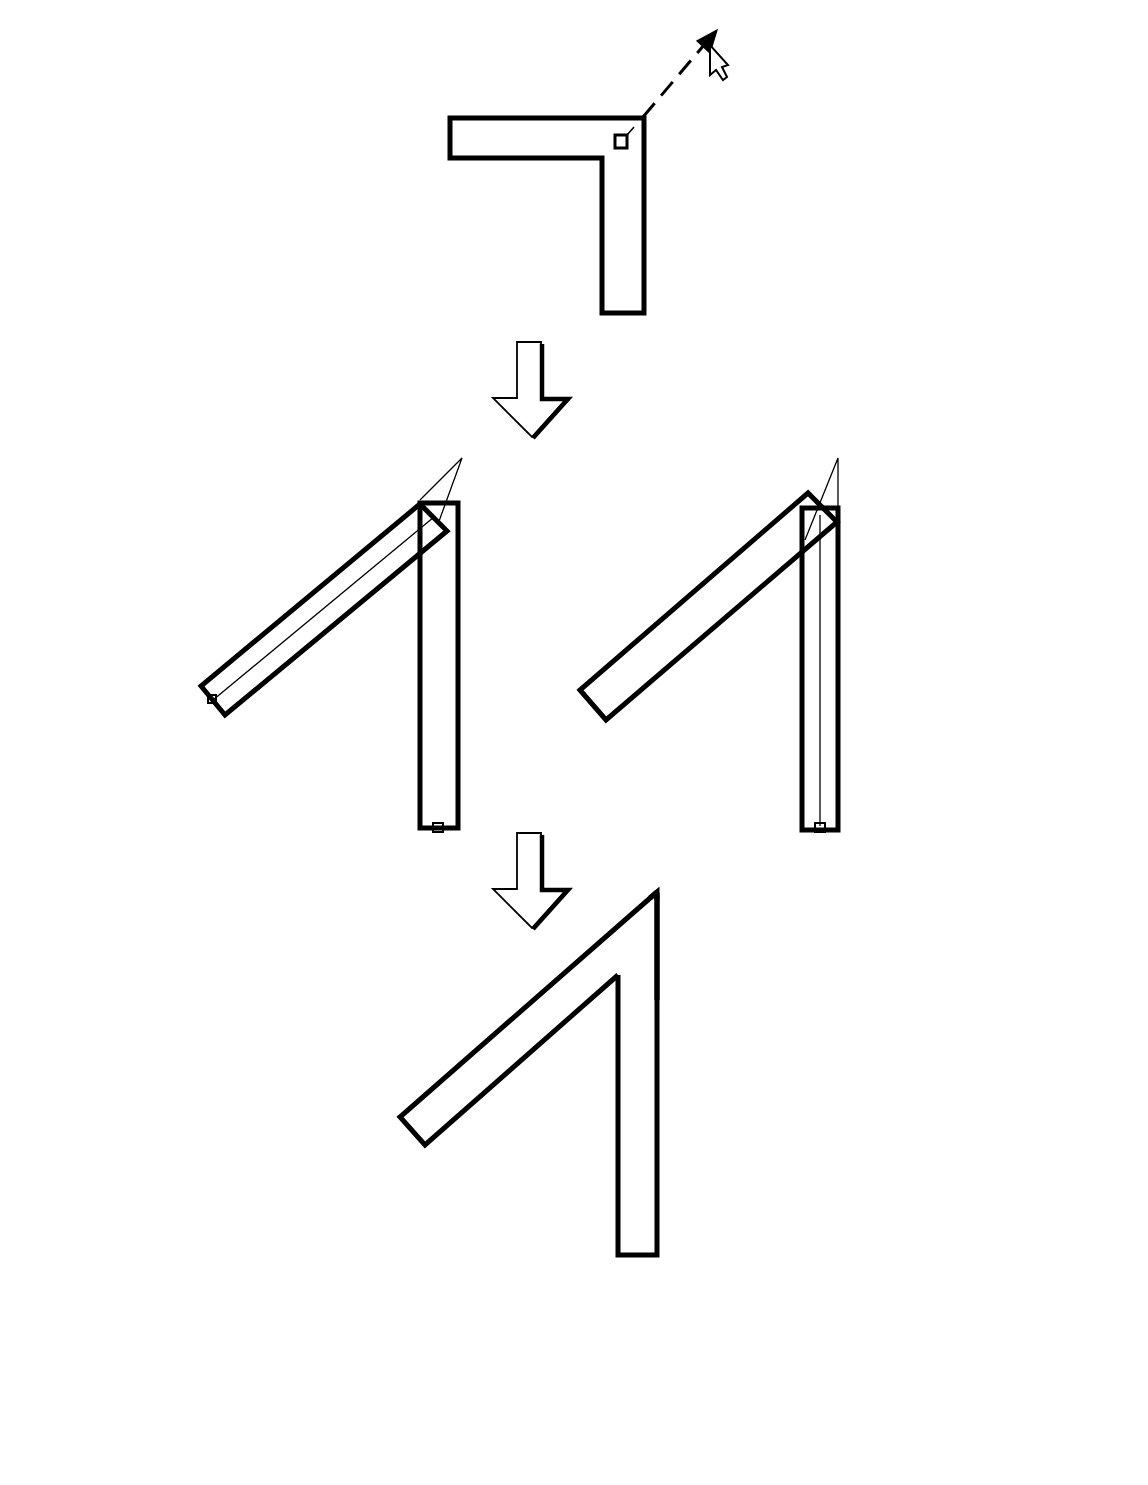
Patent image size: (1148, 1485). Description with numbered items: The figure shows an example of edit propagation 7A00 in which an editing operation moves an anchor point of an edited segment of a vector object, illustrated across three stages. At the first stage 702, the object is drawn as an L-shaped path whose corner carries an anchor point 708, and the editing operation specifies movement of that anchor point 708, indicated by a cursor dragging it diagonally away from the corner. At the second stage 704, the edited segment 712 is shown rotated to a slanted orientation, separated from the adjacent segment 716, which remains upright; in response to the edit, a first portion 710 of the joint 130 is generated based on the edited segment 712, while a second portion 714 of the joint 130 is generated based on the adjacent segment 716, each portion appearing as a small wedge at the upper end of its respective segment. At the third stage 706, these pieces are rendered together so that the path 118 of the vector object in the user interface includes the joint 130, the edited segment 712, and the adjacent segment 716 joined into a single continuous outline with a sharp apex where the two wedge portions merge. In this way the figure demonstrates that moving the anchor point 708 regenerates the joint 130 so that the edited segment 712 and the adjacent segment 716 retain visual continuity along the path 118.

The sequence of shape editing operations 7A00 is at (226, 90).
The first stage 702 is at (378, 85).
The anchor point 708 is at (627, 142).
The second stage 704 is at (239, 506).
The first portion 710 is at (434, 496).
The edited segment 712 is at (390, 543).
The second portion 714 is at (833, 505).
The adjacent segment 716 is at (823, 633).
The third stage 706 is at (421, 967).
The path 118 is at (658, 890).
The joint 130 is at (661, 950).